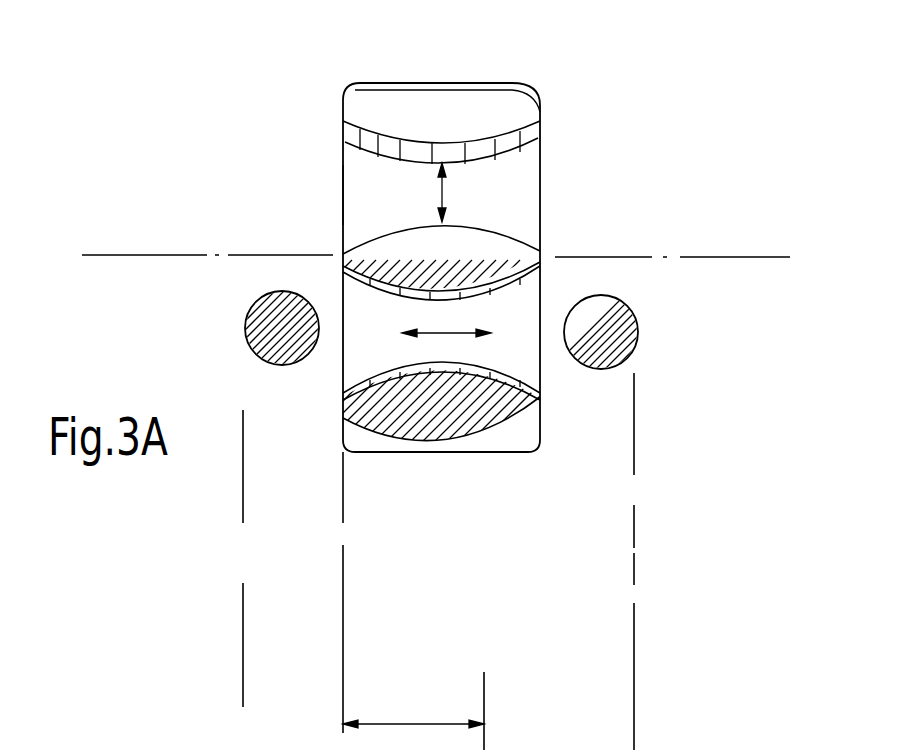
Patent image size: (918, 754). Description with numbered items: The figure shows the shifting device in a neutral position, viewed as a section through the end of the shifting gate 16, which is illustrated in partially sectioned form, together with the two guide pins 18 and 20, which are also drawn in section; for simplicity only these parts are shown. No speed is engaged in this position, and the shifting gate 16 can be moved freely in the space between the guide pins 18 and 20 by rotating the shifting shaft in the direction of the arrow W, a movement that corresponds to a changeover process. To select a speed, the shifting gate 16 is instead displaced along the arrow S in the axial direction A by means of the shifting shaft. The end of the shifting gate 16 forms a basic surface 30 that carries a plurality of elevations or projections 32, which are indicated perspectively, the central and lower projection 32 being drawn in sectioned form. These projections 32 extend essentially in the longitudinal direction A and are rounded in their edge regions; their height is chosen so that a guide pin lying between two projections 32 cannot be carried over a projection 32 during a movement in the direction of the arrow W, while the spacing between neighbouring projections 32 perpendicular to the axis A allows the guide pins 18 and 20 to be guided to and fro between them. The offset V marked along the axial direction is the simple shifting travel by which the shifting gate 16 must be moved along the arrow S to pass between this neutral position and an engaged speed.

The shifting gate 16 is at (542, 158).
The guide pin 18 is at (246, 337).
The guide pin 20 is at (638, 328).
The basic surface 30 is at (376, 196).
The projections 32 is at (525, 82).
The axial direction A is at (727, 257).
The arrow W is at (445, 195).
The arrow S is at (443, 333).
The offset V is at (438, 561).